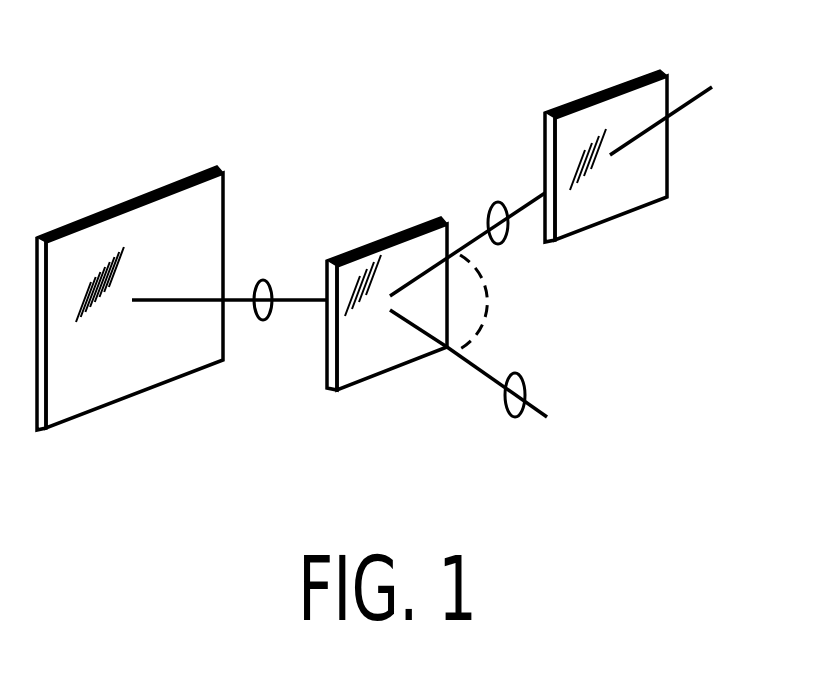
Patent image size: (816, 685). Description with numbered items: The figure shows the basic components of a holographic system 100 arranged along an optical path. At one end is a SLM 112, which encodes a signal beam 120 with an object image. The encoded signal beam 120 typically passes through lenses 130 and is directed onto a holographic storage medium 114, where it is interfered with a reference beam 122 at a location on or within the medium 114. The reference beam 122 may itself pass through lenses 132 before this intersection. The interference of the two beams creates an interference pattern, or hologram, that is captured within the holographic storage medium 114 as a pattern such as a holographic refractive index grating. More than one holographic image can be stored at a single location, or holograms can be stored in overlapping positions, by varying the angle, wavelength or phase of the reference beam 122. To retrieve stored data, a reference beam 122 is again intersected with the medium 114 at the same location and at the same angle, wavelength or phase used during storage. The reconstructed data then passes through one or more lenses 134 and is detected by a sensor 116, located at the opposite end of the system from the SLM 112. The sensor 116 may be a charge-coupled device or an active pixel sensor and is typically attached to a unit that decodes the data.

The holographic system 100 is at (380, 128).
The SLM 112 is at (612, 220).
The holographic storage medium 114 is at (390, 368).
The sensor 116 is at (132, 396).
The signal beam 120 is at (688, 105).
The reference beam 122 is at (527, 420).
The lenses 130 is at (496, 202).
The lenses 132 is at (520, 373).
The lenses 134 is at (263, 280).